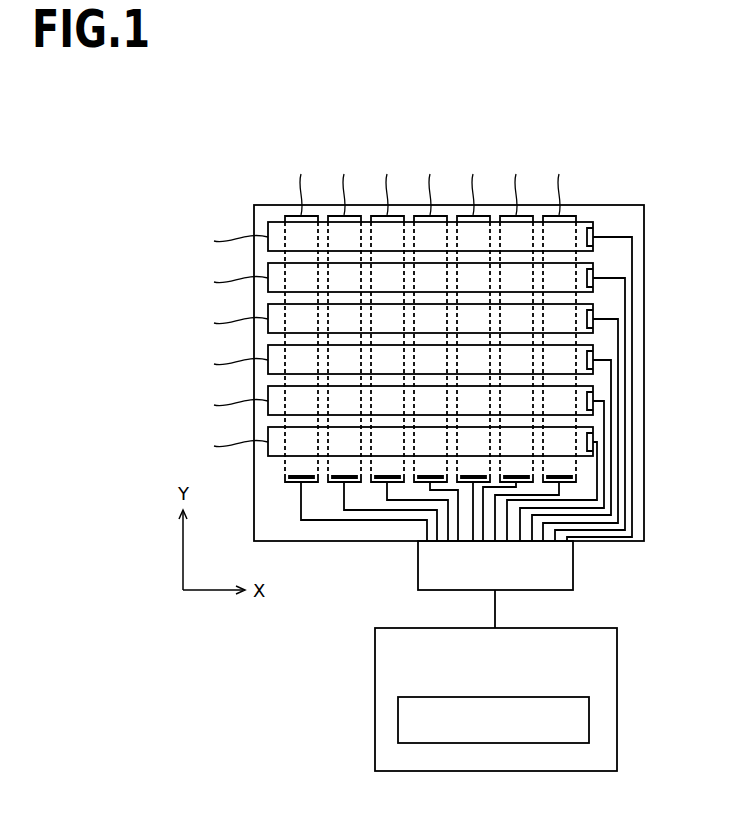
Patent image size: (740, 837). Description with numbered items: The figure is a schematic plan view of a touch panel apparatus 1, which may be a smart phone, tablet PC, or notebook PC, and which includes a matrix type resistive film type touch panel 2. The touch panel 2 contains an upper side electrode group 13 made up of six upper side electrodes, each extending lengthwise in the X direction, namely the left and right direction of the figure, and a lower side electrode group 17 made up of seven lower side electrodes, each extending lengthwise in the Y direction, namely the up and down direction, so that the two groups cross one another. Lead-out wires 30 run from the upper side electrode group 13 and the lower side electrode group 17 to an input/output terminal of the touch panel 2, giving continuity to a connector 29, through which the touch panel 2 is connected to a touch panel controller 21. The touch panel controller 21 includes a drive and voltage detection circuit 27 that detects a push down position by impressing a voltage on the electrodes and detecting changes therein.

The touch panel apparatus 1 is at (632, 163).
The resistive film type touch panel 2 is at (650, 245).
The upper side electrode group 13 is at (178, 230).
The lower side electrode group 17 is at (567, 145).
The touch panel controller 21 is at (617, 665).
The drive and voltage detection circuit 27 is at (589, 720).
The connector 29 is at (573, 575).
The lead-out wires 30 is at (632, 473).